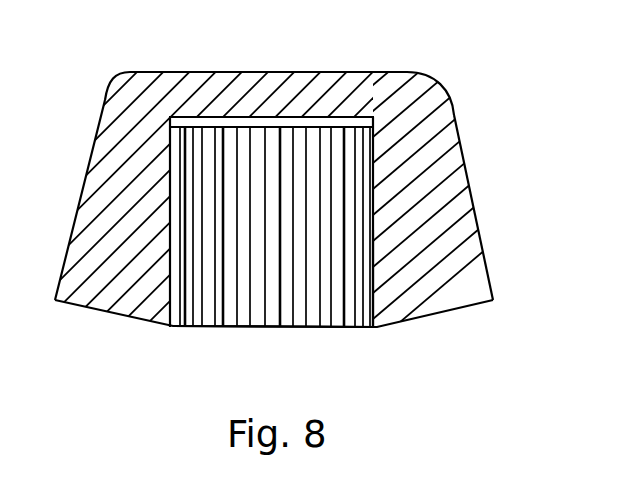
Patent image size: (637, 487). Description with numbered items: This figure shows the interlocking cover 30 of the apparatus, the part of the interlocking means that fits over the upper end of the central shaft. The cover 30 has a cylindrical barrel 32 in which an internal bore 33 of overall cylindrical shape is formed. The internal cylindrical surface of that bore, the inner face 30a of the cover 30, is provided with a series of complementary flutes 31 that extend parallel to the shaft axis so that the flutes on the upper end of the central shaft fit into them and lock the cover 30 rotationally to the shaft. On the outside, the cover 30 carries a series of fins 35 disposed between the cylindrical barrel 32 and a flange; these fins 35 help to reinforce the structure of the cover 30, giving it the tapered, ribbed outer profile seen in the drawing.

The cover 30 is at (462, 80).
The inner face 30a is at (372, 238).
The complementary flutes 31 is at (257, 318).
The cylindrical barrel 32 is at (374, 156).
The internal bore 33 is at (288, 130).
The fins 35 is at (85, 194).